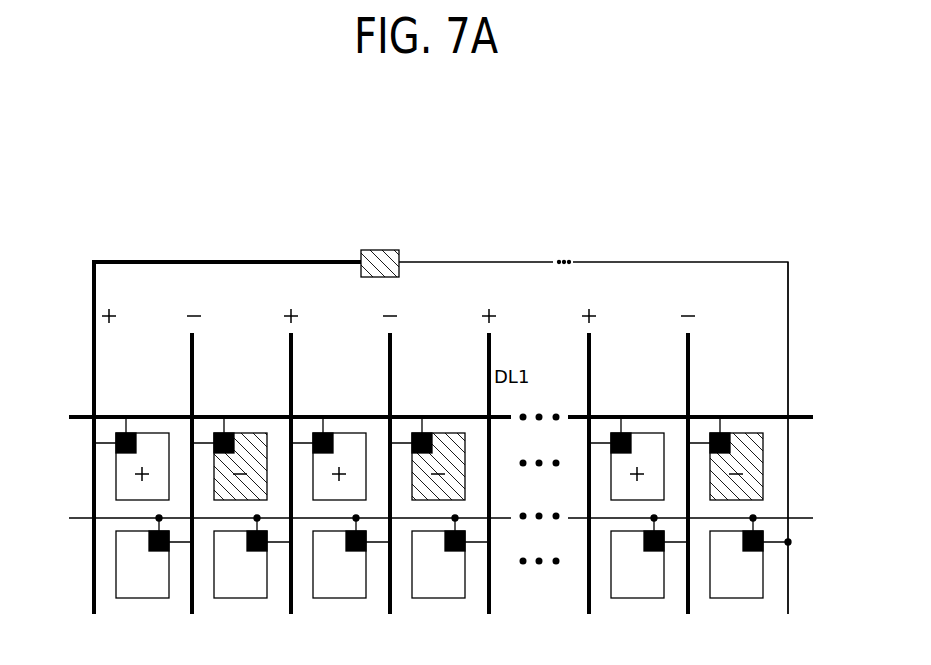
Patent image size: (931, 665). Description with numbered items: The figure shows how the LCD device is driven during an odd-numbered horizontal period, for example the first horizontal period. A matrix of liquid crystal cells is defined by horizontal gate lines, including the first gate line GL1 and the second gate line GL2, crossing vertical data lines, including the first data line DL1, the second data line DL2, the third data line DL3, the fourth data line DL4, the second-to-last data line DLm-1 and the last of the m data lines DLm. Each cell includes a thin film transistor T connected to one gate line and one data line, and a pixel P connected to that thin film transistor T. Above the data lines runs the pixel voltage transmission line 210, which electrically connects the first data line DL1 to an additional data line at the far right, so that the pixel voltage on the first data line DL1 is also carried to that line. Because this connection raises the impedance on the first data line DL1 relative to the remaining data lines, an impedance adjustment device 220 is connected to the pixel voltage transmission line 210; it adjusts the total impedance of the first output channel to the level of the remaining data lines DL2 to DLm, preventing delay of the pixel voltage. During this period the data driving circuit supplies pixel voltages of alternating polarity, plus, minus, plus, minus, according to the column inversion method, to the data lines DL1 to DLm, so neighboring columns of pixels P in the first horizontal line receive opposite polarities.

The pixel voltage transmission line 210 is at (287, 259).
The impedance adjustment device 220 is at (378, 250).
The thin film transistor T is at (729, 447).
The pixel P is at (755, 487).
The first gate line GL1 is at (420, 417).
The second gate line GL2 is at (420, 517).
The first data line DL1 is at (114, 438).
The second data line DL2 is at (212, 473).
The third data line DL3 is at (311, 473).
The fourth data line DL4 is at (410, 473).
The (m-1)th data line DLm-1 is at (622, 473).
The (m)th data line DLm is at (711, 473).